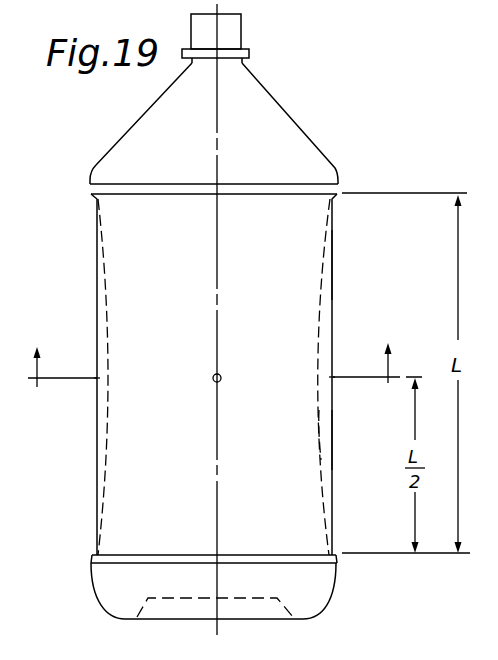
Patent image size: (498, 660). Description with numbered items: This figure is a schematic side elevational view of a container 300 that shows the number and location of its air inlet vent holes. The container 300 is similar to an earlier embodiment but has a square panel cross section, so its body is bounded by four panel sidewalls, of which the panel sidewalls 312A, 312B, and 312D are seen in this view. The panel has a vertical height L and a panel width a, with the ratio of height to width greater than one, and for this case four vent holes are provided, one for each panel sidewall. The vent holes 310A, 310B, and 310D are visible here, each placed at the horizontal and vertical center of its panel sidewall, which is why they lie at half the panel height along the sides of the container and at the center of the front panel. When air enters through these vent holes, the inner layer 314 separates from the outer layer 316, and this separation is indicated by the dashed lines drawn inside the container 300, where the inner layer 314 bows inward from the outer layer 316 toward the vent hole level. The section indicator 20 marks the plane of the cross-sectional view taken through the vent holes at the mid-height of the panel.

The container 300 is at (283, 98).
The panel sidewall 312A is at (290, 243).
The panel sidewall 312B is at (332, 269).
The panel sidewall 312D is at (97, 279).
The vent hole 310A is at (221, 378).
The vent hole 310B is at (333, 381).
The vent hole 310D is at (97, 381).
The inner layer 314 is at (322, 433).
The outer layer 316 is at (333, 440).
The section line 20- 20 is at (222, 347).